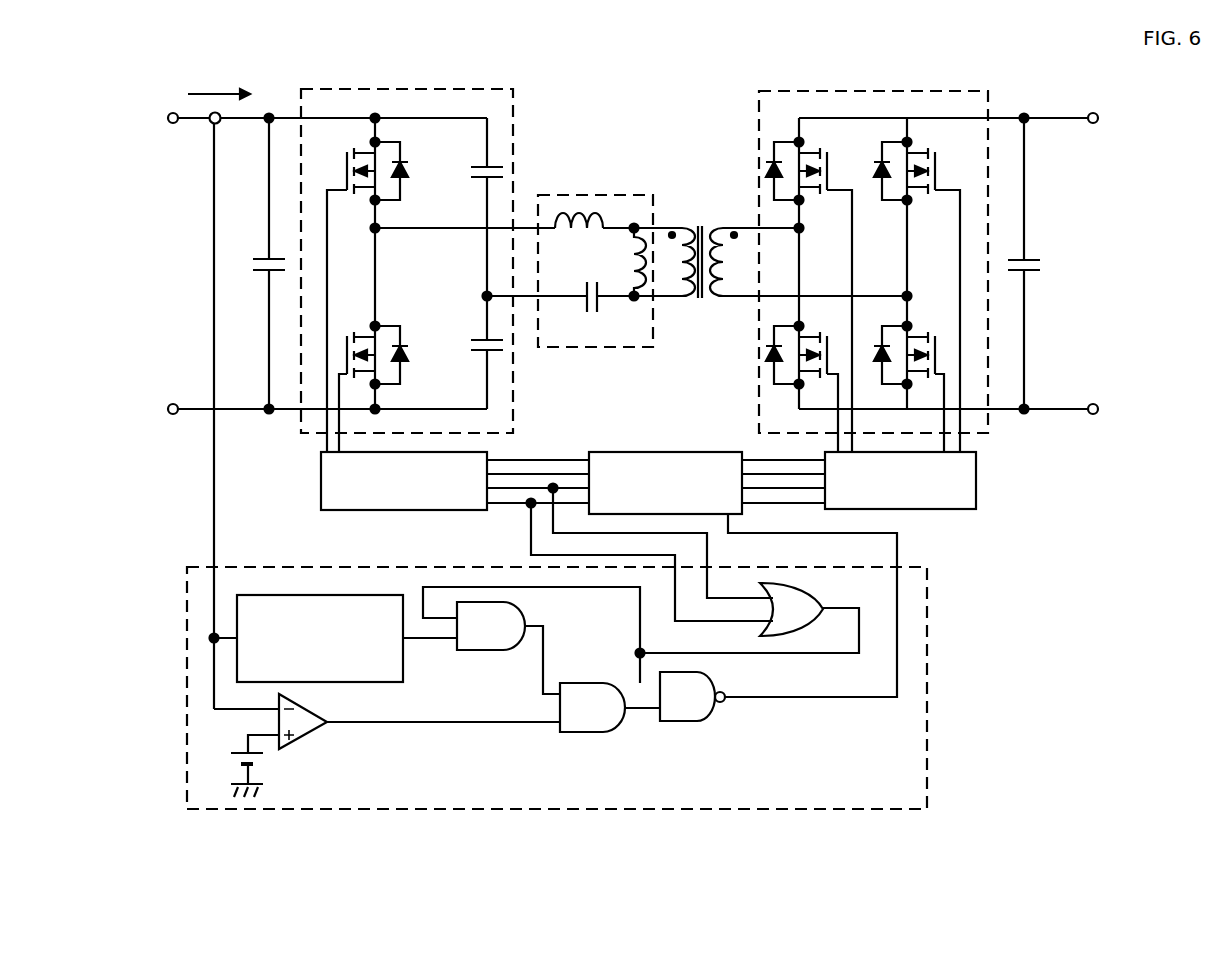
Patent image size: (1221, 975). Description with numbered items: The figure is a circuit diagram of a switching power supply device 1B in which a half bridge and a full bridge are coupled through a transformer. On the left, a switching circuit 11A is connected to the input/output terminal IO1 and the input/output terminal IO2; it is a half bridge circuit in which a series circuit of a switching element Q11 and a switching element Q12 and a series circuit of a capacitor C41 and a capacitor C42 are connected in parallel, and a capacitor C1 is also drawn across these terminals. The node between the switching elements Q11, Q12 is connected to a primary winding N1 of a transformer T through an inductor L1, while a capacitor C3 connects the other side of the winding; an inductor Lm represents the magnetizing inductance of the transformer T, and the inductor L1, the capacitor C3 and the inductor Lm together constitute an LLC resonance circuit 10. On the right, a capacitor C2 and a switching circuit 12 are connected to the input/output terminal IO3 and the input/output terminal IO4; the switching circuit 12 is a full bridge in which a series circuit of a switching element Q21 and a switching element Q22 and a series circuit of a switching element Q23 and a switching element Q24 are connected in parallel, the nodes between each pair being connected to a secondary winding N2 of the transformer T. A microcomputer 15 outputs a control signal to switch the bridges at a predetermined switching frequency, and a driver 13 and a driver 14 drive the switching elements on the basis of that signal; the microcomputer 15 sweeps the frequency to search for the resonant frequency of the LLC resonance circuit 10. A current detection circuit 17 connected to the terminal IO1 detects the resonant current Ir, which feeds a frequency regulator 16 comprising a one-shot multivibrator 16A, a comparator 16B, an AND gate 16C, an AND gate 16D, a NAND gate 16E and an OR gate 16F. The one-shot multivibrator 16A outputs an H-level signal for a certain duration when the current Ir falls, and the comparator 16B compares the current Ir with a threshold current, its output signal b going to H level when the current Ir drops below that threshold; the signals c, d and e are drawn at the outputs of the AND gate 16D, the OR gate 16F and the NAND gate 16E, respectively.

The switching power supply device 1B is at (661, 97).
The switching circuit 11A is at (301, 89).
The switching circuit 12 is at (770, 91).
The LLC resonance circuit 10 is at (650, 195).
The transformer T is at (693, 210).
The current detection circuit 17 is at (226, 131).
The driver 13 is at (321, 510).
The driver 14 is at (976, 509).
The microcomputer 15 is at (667, 452).
The frequency regulator 16 is at (190, 567).
The one-shot multivibrator 16A is at (285, 595).
The comparator 16B is at (306, 745).
The AND gate 16C is at (455, 652).
The AND gate 16D is at (572, 733).
The NAND gate 16E is at (688, 723).
The OR gate 16F is at (800, 586).
The switching element Q11 is at (386, 291).
The switching element Q12 is at (381, 374).
The switching element Q21 is at (922, 290).
The switching element Q22 is at (914, 380).
The switching element Q23 is at (813, 290).
The switching element Q24 is at (806, 380).
The capacitor C1 is at (264, 263).
The capacitor C2 is at (1035, 263).
The capacitor C3 is at (592, 311).
The capacitor C41 is at (471, 207).
The capacitor C42 is at (471, 352).
The inductor L1 is at (579, 235).
The inductor Lm is at (623, 262).
The primary winding N1 is at (681, 277).
The secondary winding N2 is at (724, 278).
The input/output terminal IO1 is at (172, 132).
The input/output terminal IO2 is at (172, 396).
The input/output terminal IO3 is at (1094, 131).
The input/output terminal IO4 is at (1092, 396).
The current Ir is at (219, 84).
The output signal of the comparator b is at (337, 711).
The AND output signal c is at (643, 721).
The OR output signal d is at (840, 598).
The NAND output signal e is at (733, 683).